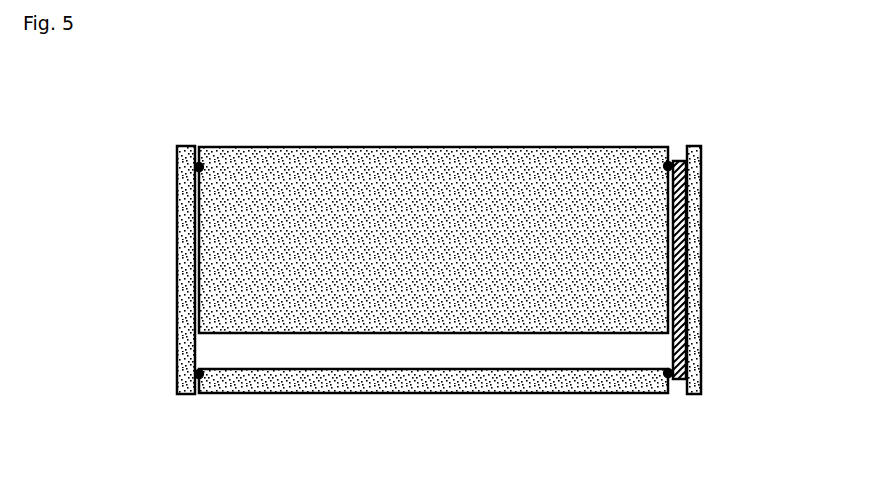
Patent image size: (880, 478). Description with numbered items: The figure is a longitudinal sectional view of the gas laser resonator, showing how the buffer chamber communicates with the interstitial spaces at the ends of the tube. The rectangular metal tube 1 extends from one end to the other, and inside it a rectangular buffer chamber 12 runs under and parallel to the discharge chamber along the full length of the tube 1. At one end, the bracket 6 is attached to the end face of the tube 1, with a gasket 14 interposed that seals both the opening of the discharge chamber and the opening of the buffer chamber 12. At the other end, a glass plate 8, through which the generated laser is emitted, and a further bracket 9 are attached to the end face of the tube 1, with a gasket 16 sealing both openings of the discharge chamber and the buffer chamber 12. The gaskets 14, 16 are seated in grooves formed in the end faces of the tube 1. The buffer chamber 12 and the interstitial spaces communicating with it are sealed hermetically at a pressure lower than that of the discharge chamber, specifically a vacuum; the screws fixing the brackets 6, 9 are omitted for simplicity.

The rectangular metal tube 1 is at (353, 147).
The bracket 6 is at (185, 252).
The glass plate 8 is at (685, 215).
The bracket 9 is at (693, 305).
The buffer chamber 12 is at (493, 348).
The gasket 14 is at (201, 166).
The gasket 16 is at (667, 165).